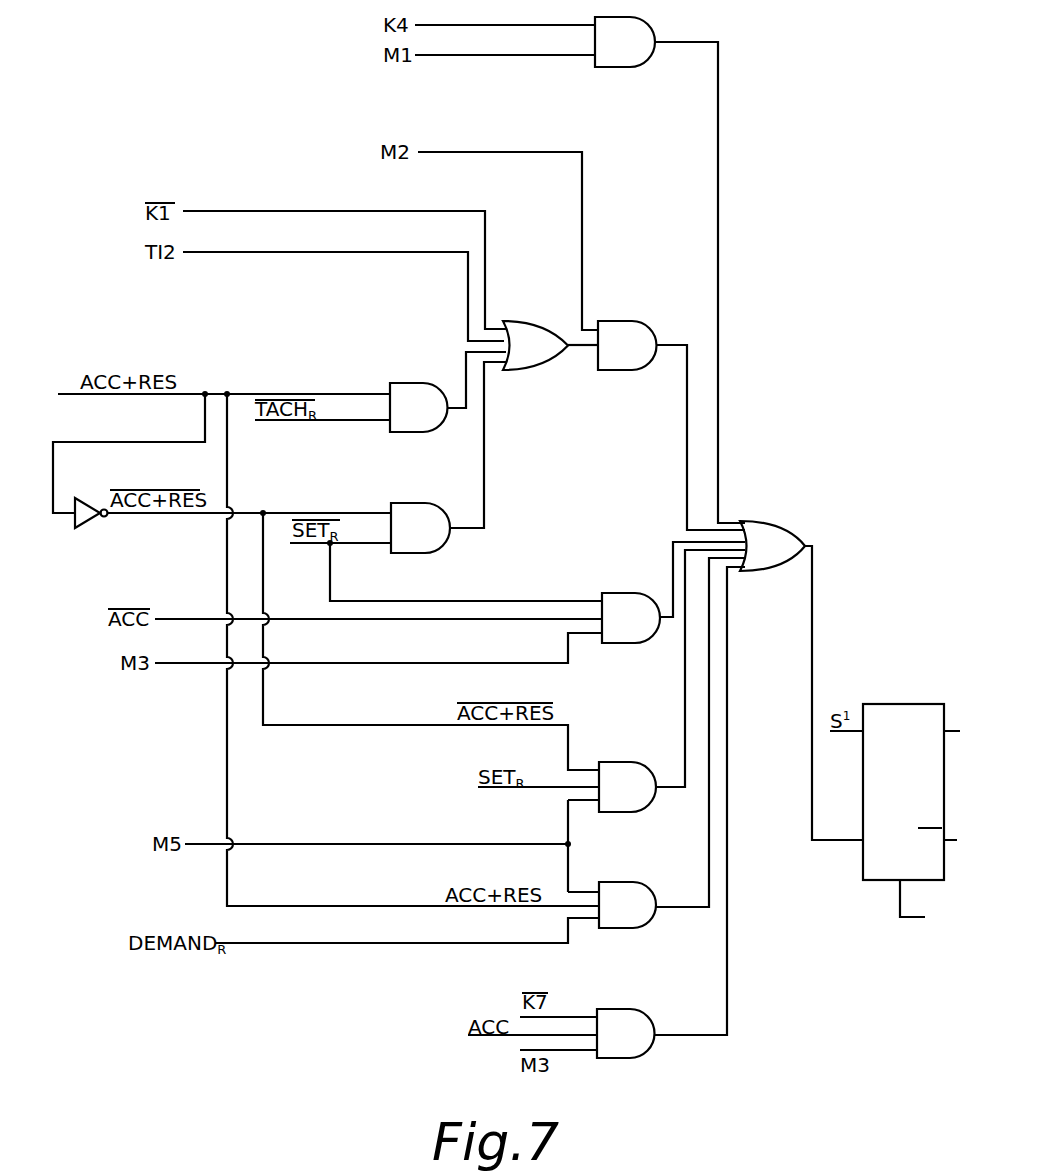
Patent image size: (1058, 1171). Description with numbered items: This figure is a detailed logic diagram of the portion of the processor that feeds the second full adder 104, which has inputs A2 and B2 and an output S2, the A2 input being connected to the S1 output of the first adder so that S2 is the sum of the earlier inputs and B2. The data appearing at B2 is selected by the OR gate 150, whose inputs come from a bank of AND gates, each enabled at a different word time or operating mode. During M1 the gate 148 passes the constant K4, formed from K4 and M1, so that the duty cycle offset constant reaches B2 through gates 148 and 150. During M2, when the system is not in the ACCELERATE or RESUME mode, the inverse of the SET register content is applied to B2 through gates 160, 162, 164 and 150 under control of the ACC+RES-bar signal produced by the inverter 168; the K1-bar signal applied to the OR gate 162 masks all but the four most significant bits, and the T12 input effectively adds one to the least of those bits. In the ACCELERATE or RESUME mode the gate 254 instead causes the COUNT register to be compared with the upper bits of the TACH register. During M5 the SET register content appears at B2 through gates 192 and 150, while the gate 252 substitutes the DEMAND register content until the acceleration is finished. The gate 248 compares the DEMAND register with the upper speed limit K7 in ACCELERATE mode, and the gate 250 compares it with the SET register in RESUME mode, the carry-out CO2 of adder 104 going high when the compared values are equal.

The gate 148 is at (608, 67).
The gate 162 is at (514, 370).
The gate 164 is at (606, 370).
The gate 254 is at (400, 432).
The gate 160 is at (428, 553).
The inverter 168 is at (85, 522).
The gate 250 is at (648, 568).
The gate 150 is at (765, 521).
The gate 192 is at (655, 742).
The gate 252 is at (625, 928).
The gate 248 is at (628, 1058).
The second full adder 104 is at (880, 683).